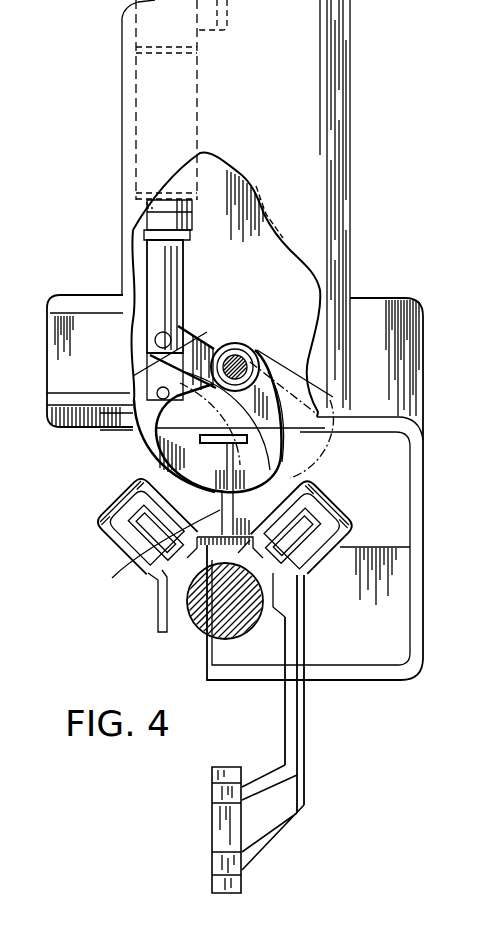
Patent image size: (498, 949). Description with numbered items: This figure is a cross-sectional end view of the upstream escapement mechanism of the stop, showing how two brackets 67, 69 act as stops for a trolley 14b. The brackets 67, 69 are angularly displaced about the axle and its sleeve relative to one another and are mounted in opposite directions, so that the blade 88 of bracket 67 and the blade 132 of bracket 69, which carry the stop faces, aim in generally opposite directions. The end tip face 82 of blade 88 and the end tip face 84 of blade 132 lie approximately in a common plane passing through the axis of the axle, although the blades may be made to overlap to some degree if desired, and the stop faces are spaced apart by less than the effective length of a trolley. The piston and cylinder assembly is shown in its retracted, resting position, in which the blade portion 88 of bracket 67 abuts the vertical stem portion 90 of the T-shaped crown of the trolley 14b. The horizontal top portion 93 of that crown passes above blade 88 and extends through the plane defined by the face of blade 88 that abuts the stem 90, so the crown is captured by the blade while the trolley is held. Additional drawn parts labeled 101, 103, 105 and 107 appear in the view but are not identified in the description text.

The trolley 14b is at (304, 705).
The bracket 67 is at (303, 489).
The bracket 69 is at (137, 413).
The end tip face 82 is at (222, 507).
The end tip face 84 is at (202, 395).
The blade 88 is at (249, 516).
The vertical stem portion 90 is at (157, 556).
The horizontal top portion 93 is at (257, 430).
The cam 101 is at (283, 455).
The pivot actuator 103 is at (197, 363).
The housing 105 is at (333, 510).
The left arm 107 is at (103, 527).
The blade 132 is at (142, 438).